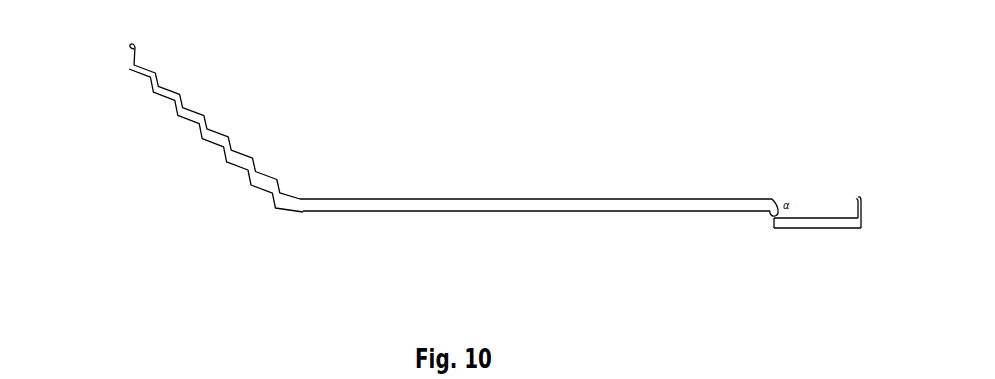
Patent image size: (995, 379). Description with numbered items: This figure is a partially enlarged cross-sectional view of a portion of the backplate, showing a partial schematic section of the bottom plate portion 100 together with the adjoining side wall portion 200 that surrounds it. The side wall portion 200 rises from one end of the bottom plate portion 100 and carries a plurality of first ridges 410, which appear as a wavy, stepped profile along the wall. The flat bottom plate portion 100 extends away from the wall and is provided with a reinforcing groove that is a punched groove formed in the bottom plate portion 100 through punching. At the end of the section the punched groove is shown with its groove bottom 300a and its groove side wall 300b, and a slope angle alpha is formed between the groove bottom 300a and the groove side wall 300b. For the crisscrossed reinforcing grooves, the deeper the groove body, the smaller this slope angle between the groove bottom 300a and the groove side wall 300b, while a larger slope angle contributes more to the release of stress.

The side wall portion 200 is at (130, 58).
The first ridges 410 is at (188, 108).
The bottom plate portion 100 is at (455, 211).
The groove bottom 300a is at (807, 228).
The groove side wall 300b is at (772, 217).